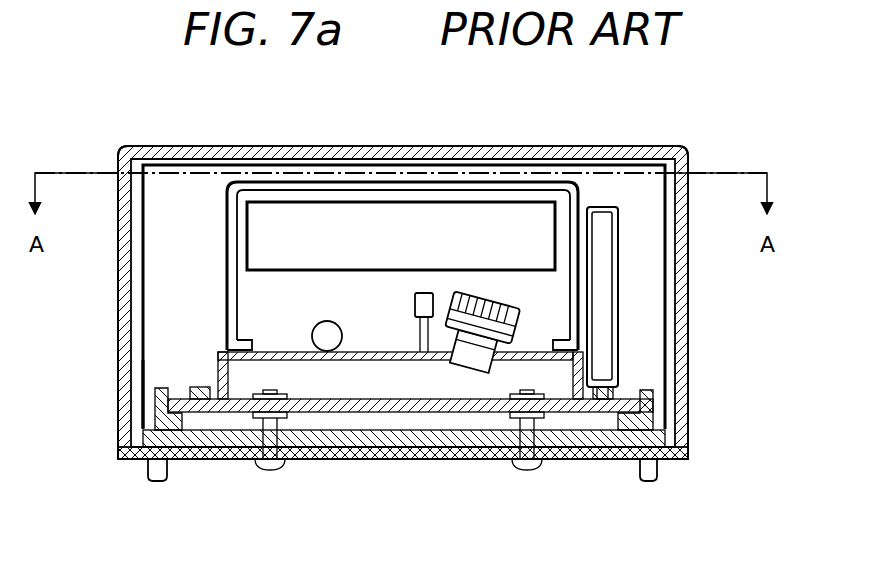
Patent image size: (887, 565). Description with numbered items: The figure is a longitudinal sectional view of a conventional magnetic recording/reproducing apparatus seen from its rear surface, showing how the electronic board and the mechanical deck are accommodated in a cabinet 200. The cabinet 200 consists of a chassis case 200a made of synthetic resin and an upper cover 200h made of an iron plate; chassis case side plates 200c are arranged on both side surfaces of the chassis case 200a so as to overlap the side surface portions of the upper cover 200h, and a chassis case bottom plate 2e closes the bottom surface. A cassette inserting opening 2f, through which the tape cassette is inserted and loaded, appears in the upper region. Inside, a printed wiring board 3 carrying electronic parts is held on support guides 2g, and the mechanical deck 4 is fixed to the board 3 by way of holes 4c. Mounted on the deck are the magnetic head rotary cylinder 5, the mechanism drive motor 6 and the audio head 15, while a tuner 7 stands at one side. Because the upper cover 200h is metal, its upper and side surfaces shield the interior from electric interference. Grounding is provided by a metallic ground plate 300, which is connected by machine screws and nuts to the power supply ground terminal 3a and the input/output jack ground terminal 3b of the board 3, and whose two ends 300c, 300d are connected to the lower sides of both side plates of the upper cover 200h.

The cabinet 200 is at (660, 133).
The chassis case side plate 200c is at (135, 310).
The upper cover 200h is at (513, 150).
The chassis case 200a is at (148, 378).
The cassette inserting opening 2f is at (372, 224).
The tuner 7 is at (613, 232).
The mechanical deck 4 is at (222, 348).
The holes for fixing the mechanical deck 4c is at (203, 387).
The mechanism drive motor 6 is at (318, 323).
The audio head 15 is at (415, 302).
The magnetic head rotary cylinder 5 is at (507, 313).
The printed wiring board 3 is at (348, 413).
The power supply ground terminal 3a is at (285, 428).
The input/output jack ground terminal 3b is at (510, 457).
The support guide 2g is at (650, 413).
The chassis case bottom plate 2e is at (573, 438).
The ground plate 300 is at (410, 462).
The end of ground plate 300c is at (670, 464).
The end of ground plate 300d is at (127, 460).